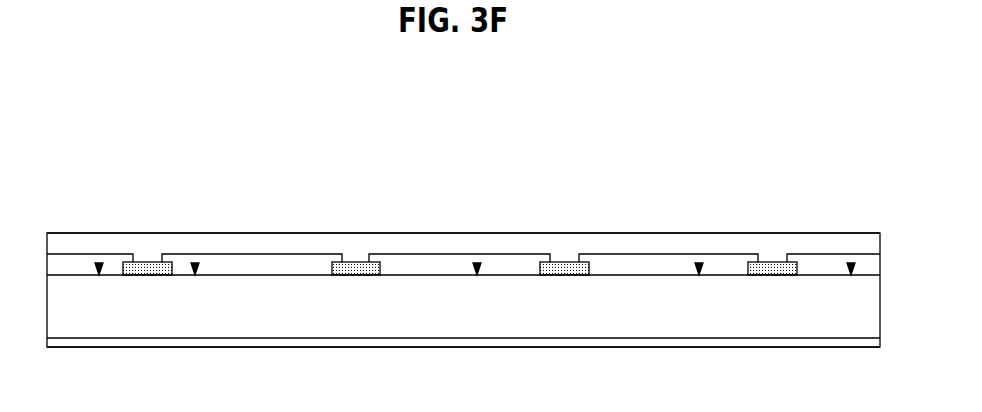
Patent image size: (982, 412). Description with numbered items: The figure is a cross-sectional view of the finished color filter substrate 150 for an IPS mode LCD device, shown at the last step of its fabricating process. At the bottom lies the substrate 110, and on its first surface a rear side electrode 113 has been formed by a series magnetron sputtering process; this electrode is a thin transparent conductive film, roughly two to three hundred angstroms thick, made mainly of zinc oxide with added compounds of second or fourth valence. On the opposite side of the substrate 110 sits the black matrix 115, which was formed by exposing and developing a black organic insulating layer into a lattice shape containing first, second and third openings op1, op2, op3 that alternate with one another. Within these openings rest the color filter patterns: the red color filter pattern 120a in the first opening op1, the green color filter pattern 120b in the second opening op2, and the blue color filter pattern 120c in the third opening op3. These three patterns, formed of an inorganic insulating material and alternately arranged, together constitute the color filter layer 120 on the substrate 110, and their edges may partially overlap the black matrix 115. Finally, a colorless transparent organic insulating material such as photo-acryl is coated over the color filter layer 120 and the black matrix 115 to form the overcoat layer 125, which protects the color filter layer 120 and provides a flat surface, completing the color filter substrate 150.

The color filter substrate 150 is at (770, 158).
The substrate 110 is at (832, 327).
The rear side electrode 113 is at (790, 340).
The black matrix 115 is at (772, 262).
The color filter layer 120 is at (400, 145).
The red color filter pattern 120a is at (322, 245).
The green color filter pattern 120b is at (417, 262).
The blue color filter pattern 120c is at (598, 262).
The overcoat layer 125 is at (272, 243).
The first opening op1 is at (195, 263).
The second opening op2 is at (477, 263).
The third opening op3 is at (99, 263).